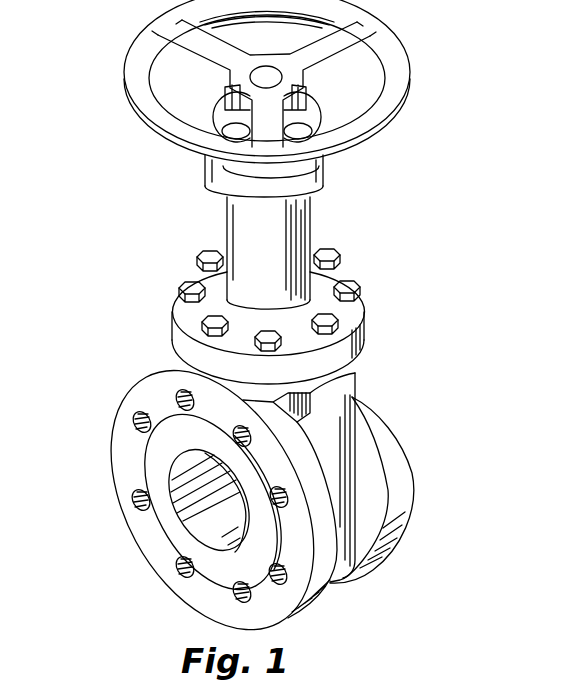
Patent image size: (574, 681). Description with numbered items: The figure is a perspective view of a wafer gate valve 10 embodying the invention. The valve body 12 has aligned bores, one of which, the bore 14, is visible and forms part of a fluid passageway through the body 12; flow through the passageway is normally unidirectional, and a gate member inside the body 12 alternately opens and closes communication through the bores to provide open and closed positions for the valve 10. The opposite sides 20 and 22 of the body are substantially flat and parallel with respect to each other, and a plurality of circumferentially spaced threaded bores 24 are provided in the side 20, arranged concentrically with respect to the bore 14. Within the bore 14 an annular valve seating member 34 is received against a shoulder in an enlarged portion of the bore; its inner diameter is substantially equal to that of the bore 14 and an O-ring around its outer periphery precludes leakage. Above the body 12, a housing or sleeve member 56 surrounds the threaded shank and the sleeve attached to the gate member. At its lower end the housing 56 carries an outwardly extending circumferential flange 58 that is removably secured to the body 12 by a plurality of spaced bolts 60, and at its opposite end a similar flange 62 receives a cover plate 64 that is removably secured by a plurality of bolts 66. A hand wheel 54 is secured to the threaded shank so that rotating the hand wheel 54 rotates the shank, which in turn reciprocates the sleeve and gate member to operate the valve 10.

The wafer gate valve 10 is at (372, 340).
The valve body 12 is at (330, 423).
The bore 14 is at (207, 530).
The side of the body 20 is at (277, 607).
The side of the body 22 is at (413, 472).
The threaded bores 24 is at (177, 398).
The valve seating member 34 is at (218, 472).
The hand wheel 54 is at (393, 66).
The housing or sleeve member 56 is at (290, 207).
The circumferential flange 58 is at (190, 270).
The bolts 60 is at (330, 249).
The circumferential flange 62 is at (226, 181).
The cover plate 64 is at (313, 110).
The bolts 66 is at (205, 125).